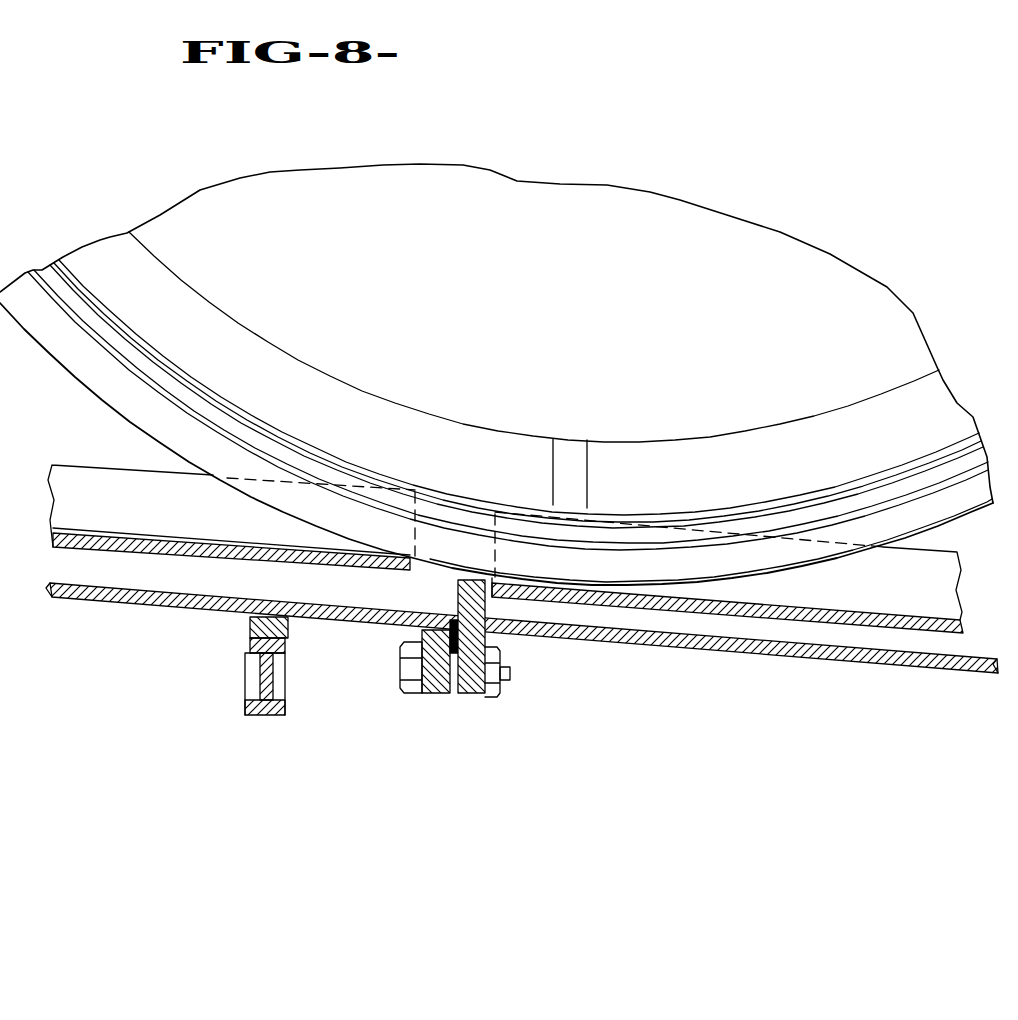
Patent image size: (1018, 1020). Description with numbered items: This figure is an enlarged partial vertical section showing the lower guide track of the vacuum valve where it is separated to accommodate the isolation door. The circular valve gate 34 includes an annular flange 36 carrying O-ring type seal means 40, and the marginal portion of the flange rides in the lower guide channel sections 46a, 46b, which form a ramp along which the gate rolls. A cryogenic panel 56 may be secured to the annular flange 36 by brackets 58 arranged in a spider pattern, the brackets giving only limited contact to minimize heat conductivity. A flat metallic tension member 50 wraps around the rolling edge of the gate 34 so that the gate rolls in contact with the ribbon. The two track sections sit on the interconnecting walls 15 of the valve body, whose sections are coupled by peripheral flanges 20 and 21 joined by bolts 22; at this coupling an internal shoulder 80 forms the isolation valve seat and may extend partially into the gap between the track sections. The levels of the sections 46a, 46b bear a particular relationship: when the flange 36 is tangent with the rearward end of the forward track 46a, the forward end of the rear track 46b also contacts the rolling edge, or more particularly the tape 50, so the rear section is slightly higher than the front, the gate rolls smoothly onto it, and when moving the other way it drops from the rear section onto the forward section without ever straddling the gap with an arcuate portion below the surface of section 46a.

The valve gate 34 is at (789, 231).
The cryogenic panel 56 is at (735, 366).
The brackets 58 is at (578, 478).
The seal means 40 is at (430, 494).
The annular flange 36 is at (455, 515).
The tension member 50 is at (442, 572).
The lower guide channel section 46a is at (900, 596).
The lower guide channel section 46b is at (172, 512).
The interconnecting walls 15 is at (667, 645).
The peripheral flange 20 is at (468, 690).
The peripheral flange 21 is at (433, 690).
The bolts 22 is at (511, 679).
The internal shoulder 80 is at (453, 601).